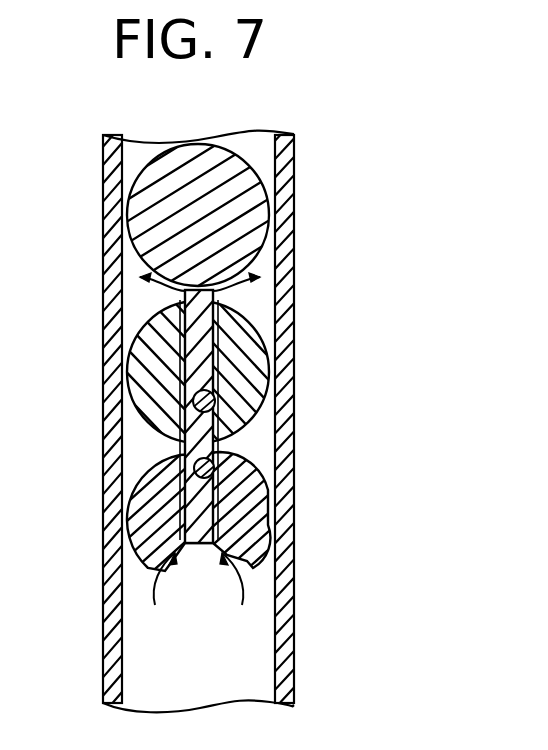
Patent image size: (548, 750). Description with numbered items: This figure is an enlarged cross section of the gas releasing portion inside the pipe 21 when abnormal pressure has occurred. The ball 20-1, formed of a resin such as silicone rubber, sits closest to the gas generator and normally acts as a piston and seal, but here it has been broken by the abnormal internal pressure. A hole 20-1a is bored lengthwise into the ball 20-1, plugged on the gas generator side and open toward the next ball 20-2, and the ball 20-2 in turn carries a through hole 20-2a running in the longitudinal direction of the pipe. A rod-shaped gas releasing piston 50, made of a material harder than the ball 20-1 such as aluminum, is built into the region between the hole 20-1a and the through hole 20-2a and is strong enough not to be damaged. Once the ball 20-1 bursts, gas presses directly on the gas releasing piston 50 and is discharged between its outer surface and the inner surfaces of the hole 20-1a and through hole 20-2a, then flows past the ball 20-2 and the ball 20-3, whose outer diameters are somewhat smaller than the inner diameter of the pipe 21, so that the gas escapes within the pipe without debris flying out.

The pipe 21 is at (295, 628).
The ball 20-3 is at (240, 228).
The ball 20-2 is at (250, 362).
The through hole 20-2a is at (250, 395).
The ball 20-1 is at (268, 488).
The hole 20-1a is at (217, 458).
The gas releasing piston 50 is at (207, 315).